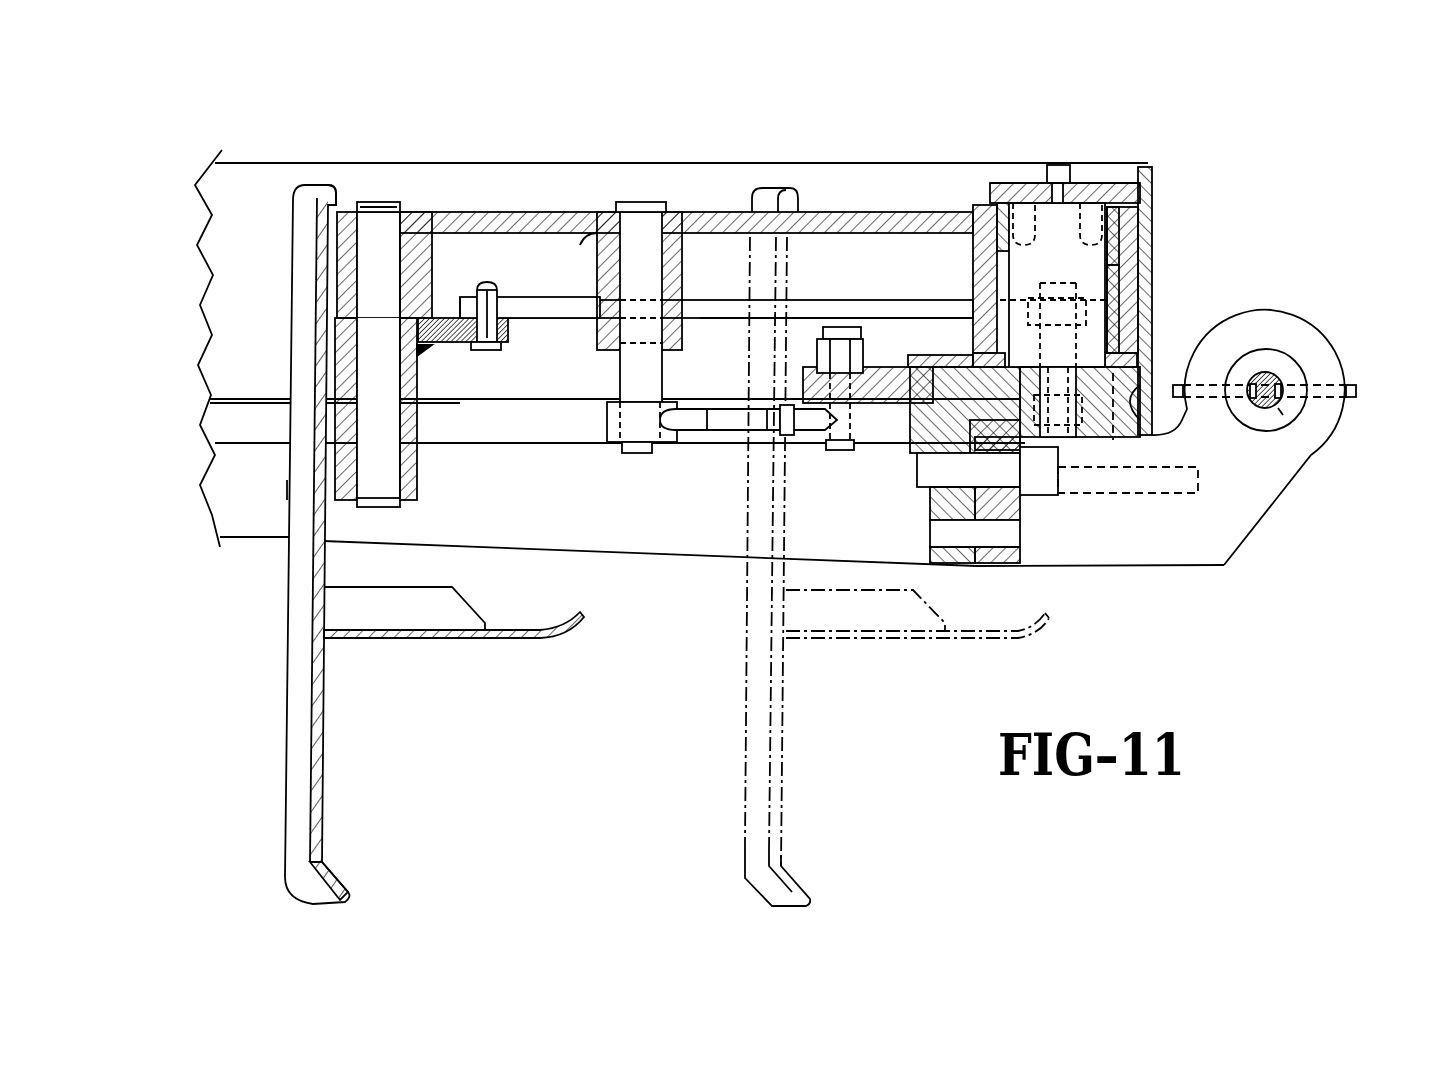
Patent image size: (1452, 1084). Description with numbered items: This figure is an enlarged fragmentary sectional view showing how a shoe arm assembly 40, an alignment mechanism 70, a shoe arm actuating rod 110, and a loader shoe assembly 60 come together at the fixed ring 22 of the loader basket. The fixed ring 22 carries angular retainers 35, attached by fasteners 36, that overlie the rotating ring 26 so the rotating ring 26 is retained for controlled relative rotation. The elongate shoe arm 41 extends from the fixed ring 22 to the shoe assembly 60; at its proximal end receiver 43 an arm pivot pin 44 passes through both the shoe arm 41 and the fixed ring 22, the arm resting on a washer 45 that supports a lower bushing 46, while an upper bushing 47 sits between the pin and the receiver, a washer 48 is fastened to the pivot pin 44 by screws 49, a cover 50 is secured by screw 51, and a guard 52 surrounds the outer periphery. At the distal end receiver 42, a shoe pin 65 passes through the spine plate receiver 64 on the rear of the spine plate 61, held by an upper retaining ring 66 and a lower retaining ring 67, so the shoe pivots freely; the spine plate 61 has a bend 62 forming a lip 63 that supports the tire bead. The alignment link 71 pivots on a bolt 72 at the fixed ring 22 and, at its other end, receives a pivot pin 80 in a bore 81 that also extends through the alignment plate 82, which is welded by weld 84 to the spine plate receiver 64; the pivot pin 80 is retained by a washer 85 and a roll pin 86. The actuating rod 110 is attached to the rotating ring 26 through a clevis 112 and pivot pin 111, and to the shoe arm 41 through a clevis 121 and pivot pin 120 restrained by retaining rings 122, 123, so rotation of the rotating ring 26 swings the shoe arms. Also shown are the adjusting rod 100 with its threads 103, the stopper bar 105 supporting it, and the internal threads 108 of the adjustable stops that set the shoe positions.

The fixed ring 22 is at (923, 418).
The rotating ring 26 is at (885, 375).
The angular retainers 35 is at (918, 363).
The fasteners 36 is at (948, 356).
The shoe arm assembly 40 is at (1087, 148).
The shoe arm 41 is at (820, 222).
The distal end receiver 42 is at (420, 265).
The proximal end receiver 43 is at (1126, 276).
The arm pivot pin 44 is at (1078, 378).
The washer 45 is at (1152, 430).
The lower bushing 46 is at (1126, 306).
The upper bushing 47 is at (1118, 220).
The washer 48 is at (1148, 206).
The screws 49 is at (1115, 186).
The cover 50 is at (1003, 188).
The screw 51 is at (1055, 168).
The guard 52 is at (1143, 262).
The loader shoe assembly 60 is at (287, 260).
The spine plate 61 is at (320, 782).
The bend 62 is at (323, 862).
The lip 63 is at (343, 888).
The spine plate receiver 64 is at (411, 470).
The shoe pin 65 is at (375, 250).
The upper retaining ring 66 is at (362, 218).
The lower retaining ring 67 is at (335, 487).
The shoe alignment mechanism 70 is at (693, 302).
The alignment link 71 is at (829, 305).
The bolt 72 is at (1118, 380).
The pivot pin 80 is at (490, 330).
The bore 81 is at (494, 292).
The alignment plate 82 is at (470, 350).
The weld 84 is at (427, 347).
The washer 85 is at (470, 290).
The roll pin 86 is at (496, 285).
The adjusting rod 100 is at (1282, 380).
The threads 103 is at (1270, 380).
The stopper bar 105 is at (1300, 332).
The internal threads 108 is at (1285, 418).
The shoe arm actuating rod 110 is at (750, 416).
The pivot pin 111 is at (843, 390).
The clevis 112 is at (800, 433).
The pivot pin 120 is at (662, 240).
The clevis 121 is at (666, 435).
The retaining ring 122 is at (628, 213).
The retaining ring 123 is at (632, 448).